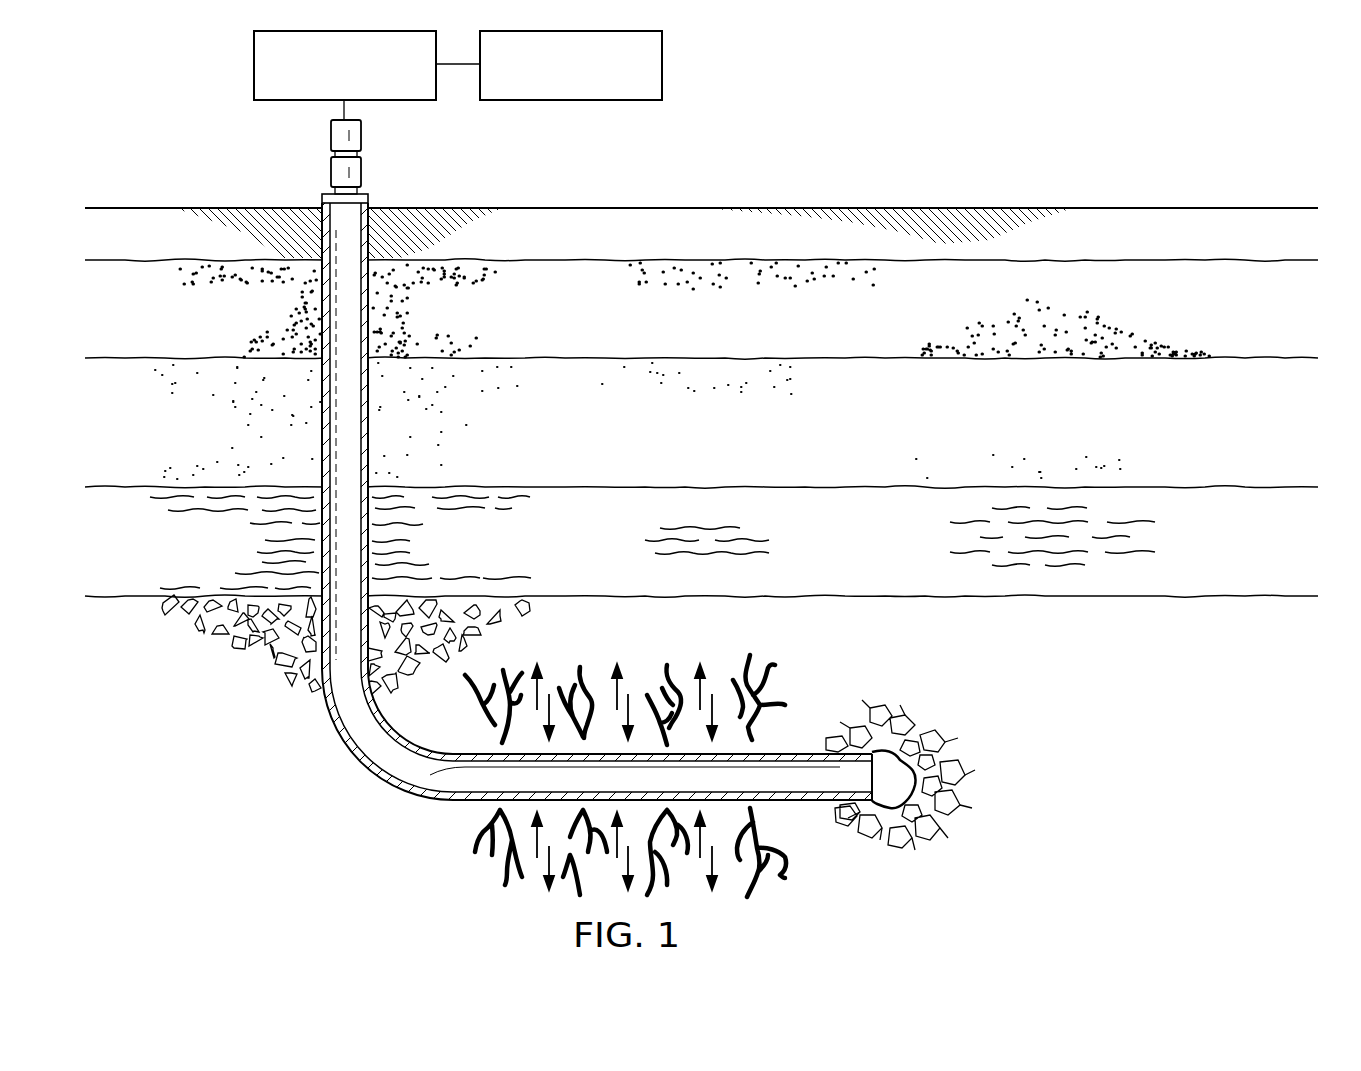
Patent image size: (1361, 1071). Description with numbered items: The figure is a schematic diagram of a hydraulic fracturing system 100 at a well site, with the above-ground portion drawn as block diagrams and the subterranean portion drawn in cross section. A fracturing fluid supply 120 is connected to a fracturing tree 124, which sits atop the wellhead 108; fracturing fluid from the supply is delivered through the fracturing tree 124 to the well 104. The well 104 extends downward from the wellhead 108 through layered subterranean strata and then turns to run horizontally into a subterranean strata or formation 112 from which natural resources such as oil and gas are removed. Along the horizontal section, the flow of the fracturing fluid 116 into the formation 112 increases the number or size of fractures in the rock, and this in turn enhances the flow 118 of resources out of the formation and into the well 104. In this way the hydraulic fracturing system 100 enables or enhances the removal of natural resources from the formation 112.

The hydraulic fracturing system 100 is at (880, 112).
The well 104 is at (322, 408).
The wellhead 108 is at (331, 172).
The subterranean strata or formation 112 is at (944, 735).
The flow of the fracturing fluid 116 is at (700, 690).
The flow of resources 118 is at (630, 700).
The fracturing fluid supply 120 is at (662, 52).
The fracturing tree 124 is at (254, 53).